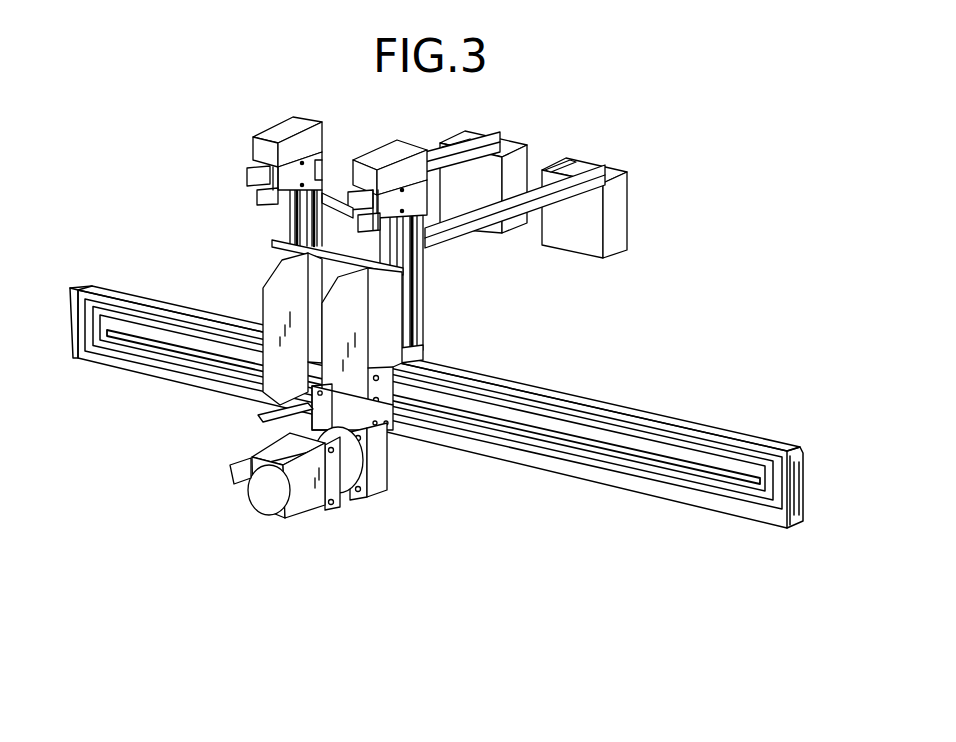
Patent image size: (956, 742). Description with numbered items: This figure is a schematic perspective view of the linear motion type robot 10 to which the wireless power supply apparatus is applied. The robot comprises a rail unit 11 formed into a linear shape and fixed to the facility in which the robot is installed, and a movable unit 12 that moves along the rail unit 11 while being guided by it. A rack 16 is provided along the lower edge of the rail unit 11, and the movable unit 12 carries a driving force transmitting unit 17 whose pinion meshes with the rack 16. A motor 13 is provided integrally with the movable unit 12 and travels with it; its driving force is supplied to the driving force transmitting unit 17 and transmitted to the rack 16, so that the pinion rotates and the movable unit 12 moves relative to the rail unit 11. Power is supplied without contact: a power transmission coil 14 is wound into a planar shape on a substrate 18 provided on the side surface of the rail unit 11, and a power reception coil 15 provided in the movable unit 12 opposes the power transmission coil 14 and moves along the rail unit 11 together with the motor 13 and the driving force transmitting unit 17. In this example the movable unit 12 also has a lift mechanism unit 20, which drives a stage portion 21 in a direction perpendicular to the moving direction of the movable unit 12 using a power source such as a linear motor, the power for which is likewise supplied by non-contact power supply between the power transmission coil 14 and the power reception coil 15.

The linear motion type robot 10 is at (428, 360).
The rail unit 11 is at (72, 325).
The movable unit 12 is at (363, 486).
The motor 13 is at (307, 513).
The power transmission coil 14 is at (428, 415).
The power reception coil 15 is at (438, 373).
The rack 16 is at (790, 528).
The driving force transmitting unit 17 is at (384, 514).
The substrate 18 is at (175, 340).
The lift mechanism unit 20 is at (262, 243).
The stage portion 21 is at (337, 192).